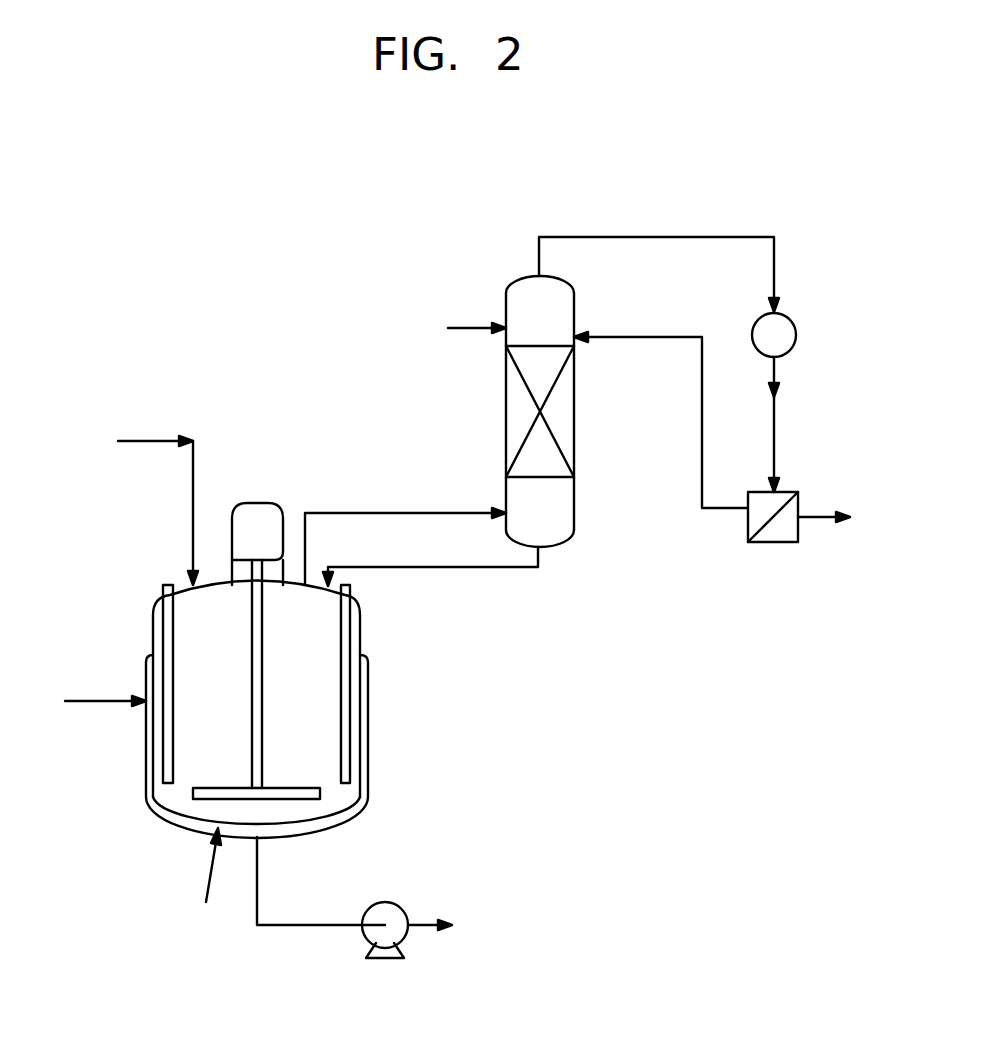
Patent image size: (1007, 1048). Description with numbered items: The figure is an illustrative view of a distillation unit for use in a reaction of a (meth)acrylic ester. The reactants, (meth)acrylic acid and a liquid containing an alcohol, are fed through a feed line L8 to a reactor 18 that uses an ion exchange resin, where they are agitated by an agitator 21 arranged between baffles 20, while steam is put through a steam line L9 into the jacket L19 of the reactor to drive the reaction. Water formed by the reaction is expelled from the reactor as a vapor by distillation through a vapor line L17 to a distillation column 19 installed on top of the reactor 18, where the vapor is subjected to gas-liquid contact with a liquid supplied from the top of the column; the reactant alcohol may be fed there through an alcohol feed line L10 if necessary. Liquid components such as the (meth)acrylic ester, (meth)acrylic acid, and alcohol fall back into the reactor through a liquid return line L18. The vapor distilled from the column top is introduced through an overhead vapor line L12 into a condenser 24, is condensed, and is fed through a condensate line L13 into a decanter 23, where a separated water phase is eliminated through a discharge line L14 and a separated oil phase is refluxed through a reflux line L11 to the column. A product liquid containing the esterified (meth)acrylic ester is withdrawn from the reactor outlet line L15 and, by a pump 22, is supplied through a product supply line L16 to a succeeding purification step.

The reactor 18 is at (362, 633).
The distillation column 19 is at (575, 404).
The baffle 20 is at (163, 590).
The agitator 21 is at (262, 718).
The pump 22 is at (365, 938).
The decanter 23 is at (768, 542).
The condenser 24 is at (792, 319).
The feed line L8 is at (140, 503).
The steam line L9 is at (89, 701).
The alcohol feed line L10 is at (469, 313).
The reflux line L11 is at (661, 404).
The column overhead vapor line L12 is at (659, 257).
The condensate line L13 is at (797, 424).
The water phase discharge line L14 is at (848, 516).
The reactor outlet line L15 is at (321, 899).
The product supply line L16 is at (456, 926).
The vapor line L17 is at (405, 530).
The liquid return line L18 is at (430, 559).
The jacket L19 is at (199, 884).